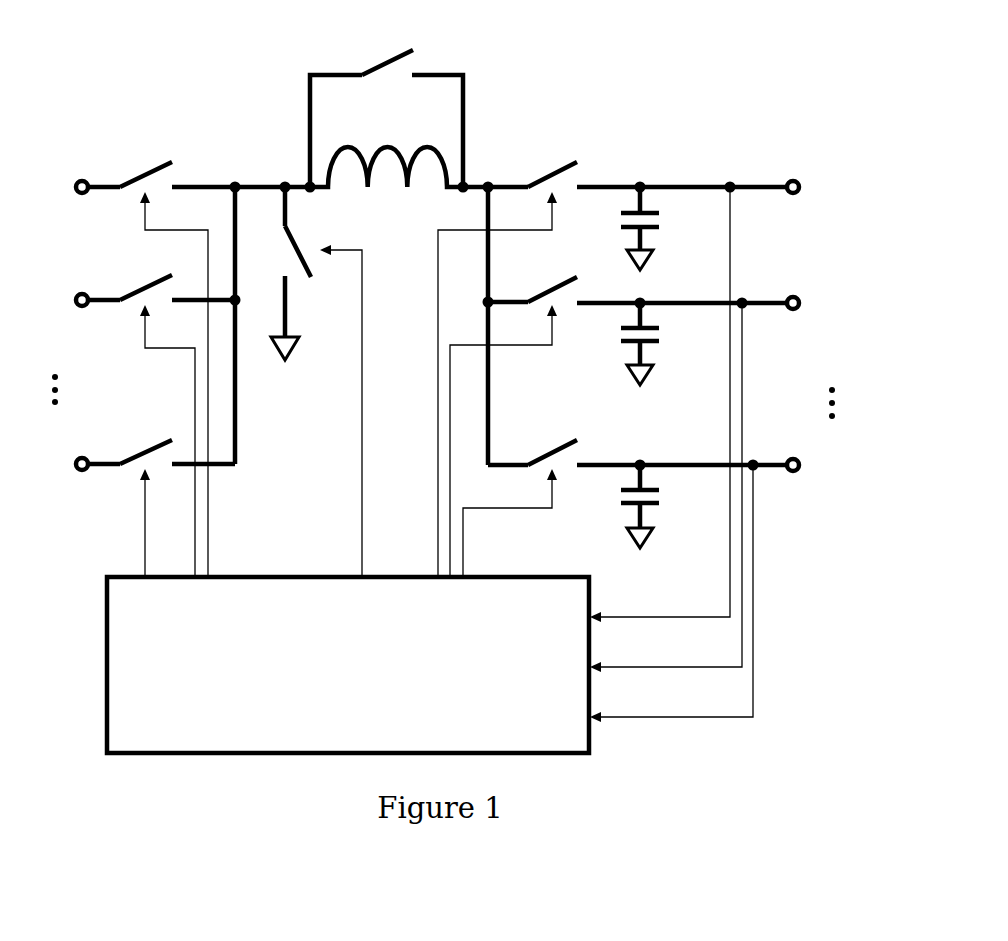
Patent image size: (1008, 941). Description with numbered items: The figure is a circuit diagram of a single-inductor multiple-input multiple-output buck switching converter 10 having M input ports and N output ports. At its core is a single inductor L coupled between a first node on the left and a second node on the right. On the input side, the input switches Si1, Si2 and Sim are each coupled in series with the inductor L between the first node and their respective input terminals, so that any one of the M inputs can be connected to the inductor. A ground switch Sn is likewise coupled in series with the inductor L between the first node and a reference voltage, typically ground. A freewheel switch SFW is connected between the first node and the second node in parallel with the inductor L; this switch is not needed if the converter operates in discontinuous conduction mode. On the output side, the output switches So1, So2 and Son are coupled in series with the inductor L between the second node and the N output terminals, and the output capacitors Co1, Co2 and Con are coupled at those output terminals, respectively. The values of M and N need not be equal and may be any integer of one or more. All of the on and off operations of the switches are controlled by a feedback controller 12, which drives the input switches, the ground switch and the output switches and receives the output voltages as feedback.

The single-inductor multiple-input multiple-output buck converter 10 is at (478, 381).
The feedback controller 12 is at (346, 648).
The inductor L is at (419, 148).
The freewheel switch SFW is at (387, 101).
The ground switch Sn is at (309, 380).
The input switch Si1 is at (169, 355).
The input switch Si2 is at (134, 412).
The input switch Sim is at (131, 494).
The output switch So1 is at (647, 378).
The output switch So2 is at (653, 459).
The output switch Son is at (660, 566).
The output capacitor Co1 is at (668, 226).
The output capacitor Co2 is at (668, 342).
The output capacitor Con is at (668, 504).